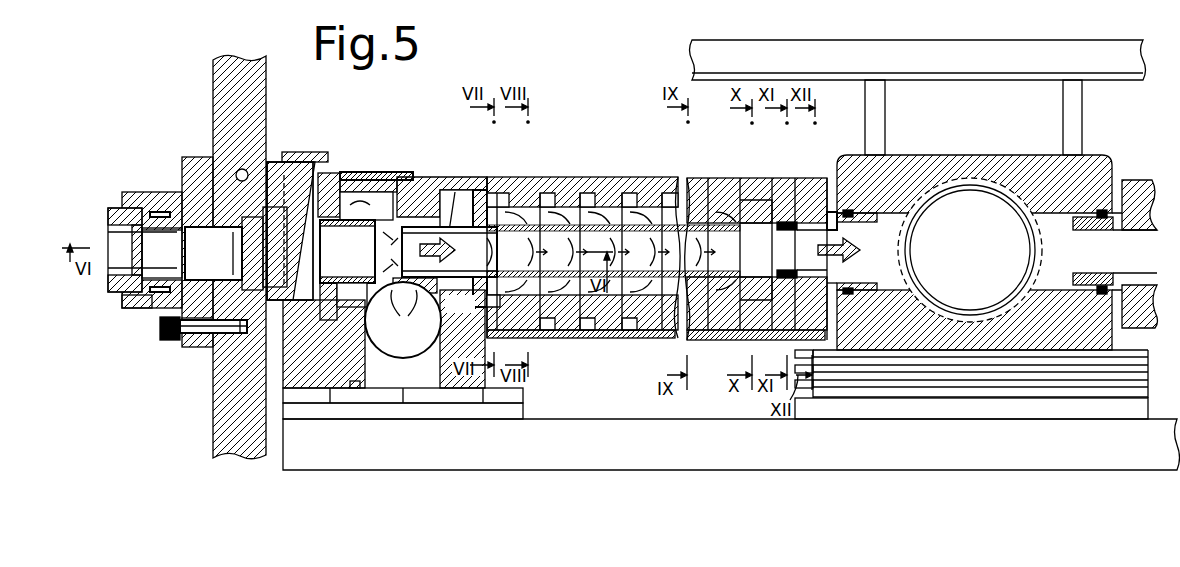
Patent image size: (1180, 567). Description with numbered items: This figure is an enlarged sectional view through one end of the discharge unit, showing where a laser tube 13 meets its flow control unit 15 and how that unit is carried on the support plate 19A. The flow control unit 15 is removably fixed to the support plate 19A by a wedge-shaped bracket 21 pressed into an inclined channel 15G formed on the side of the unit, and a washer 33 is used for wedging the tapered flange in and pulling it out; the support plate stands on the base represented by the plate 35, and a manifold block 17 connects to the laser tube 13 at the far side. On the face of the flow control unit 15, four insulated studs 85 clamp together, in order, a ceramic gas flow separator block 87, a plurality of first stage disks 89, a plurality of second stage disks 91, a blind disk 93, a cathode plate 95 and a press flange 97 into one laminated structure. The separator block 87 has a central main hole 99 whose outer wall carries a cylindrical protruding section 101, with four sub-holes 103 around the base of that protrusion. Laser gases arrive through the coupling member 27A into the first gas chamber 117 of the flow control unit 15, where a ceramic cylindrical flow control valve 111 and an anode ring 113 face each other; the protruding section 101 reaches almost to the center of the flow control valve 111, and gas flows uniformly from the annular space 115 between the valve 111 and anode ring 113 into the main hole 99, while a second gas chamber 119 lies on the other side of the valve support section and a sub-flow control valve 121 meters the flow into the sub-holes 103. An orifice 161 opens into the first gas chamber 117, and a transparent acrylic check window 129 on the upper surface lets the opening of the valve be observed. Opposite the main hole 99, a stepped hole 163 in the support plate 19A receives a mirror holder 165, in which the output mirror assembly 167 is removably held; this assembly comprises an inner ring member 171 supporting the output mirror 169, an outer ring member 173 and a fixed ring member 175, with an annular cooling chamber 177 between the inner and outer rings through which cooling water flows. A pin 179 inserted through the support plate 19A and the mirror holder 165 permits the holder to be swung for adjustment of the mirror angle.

The laser tube 13 is at (613, 244).
The flow control unit 15 is at (302, 390).
The inclined channel 15G is at (335, 173).
The manifold block 17 is at (1003, 157).
The support plate 19A is at (234, 456).
The wedge-shaped bracket 21 is at (276, 165).
The coupling member 27A is at (403, 360).
The washer 33 is at (313, 152).
The base plate 35 is at (650, 469).
The insulated stud 85 is at (600, 338).
The gas flow separator block 87 is at (520, 178).
The first stage disk 89 is at (556, 178).
The second stage disk 91 is at (693, 179).
The blind disk 93 is at (745, 178).
The cathode plate 95 is at (777, 178).
The press flange 97 is at (805, 178).
The main hole 99 is at (643, 316).
The cylindrical protruding section 101 is at (454, 192).
The sub-hole 103 is at (596, 180).
The flow control valve 111 is at (449, 252).
The anode ring 113 is at (358, 167).
The annular space 115 is at (359, 251).
The first gas chamber 117 is at (366, 307).
The second gas chamber 119 is at (440, 289).
The sub-flow control valve 121 is at (490, 179).
The check window 129 is at (413, 173).
The orifice 161 is at (422, 177).
The stepped hole 163 is at (207, 164).
The mirror holder 165 is at (164, 192).
The output mirror assembly 167 is at (175, 207).
The output mirror 169 is at (117, 250).
The inner ring member 171 is at (128, 307).
The outer ring member 173 is at (152, 210).
The fixed ring member 175 is at (124, 206).
The annular cooling chamber 177 is at (162, 324).
The pin 179 is at (212, 352).